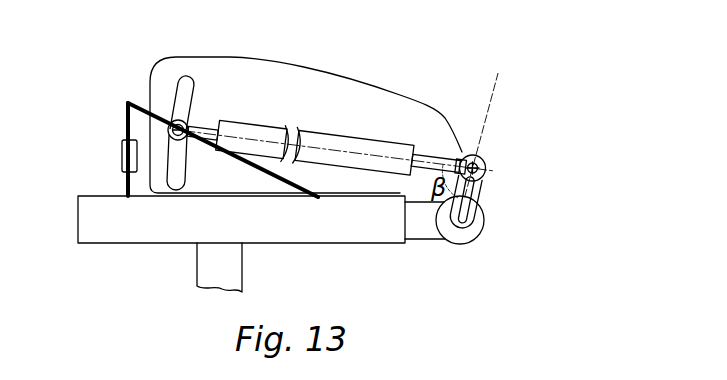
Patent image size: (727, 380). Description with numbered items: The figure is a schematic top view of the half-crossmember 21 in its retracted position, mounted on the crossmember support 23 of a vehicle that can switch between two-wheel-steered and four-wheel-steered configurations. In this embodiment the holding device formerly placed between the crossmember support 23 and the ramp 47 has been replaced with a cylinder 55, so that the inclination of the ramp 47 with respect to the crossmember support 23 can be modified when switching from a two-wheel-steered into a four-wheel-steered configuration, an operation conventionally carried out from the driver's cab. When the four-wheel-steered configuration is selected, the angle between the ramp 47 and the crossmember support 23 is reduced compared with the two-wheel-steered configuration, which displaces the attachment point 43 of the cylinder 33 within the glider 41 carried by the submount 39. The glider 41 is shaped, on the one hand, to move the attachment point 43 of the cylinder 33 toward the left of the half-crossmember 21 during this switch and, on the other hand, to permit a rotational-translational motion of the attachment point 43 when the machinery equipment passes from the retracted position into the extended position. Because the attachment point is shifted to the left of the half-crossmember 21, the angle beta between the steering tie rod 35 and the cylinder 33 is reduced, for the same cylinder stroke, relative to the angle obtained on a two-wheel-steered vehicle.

The half-crossmember 21 is at (325, 247).
The crossmember support 23 is at (157, 245).
The cylinder 33 is at (325, 140).
The steering tie rod 35 is at (483, 188).
The submount 39 is at (292, 67).
The glider 41 is at (175, 100).
The attachment point 43 is at (171, 121).
The ramp 47 is at (138, 104).
The cylinder 55 is at (122, 124).